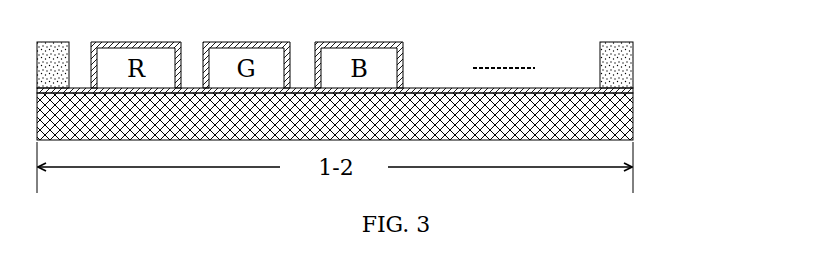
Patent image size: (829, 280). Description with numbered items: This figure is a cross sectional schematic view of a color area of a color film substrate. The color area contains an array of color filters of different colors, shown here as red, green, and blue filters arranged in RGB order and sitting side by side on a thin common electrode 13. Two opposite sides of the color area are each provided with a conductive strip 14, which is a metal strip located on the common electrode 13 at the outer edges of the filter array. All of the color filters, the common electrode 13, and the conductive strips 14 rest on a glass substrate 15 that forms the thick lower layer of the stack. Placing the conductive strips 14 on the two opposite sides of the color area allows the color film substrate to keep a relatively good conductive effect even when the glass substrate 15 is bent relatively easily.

The common electrode 13 is at (623, 92).
The conductive strip 14 is at (623, 62).
The glass substrate 15 is at (623, 132).